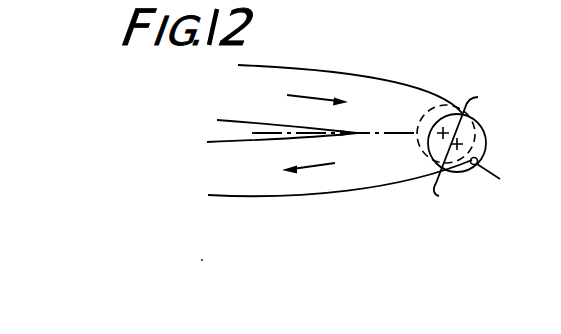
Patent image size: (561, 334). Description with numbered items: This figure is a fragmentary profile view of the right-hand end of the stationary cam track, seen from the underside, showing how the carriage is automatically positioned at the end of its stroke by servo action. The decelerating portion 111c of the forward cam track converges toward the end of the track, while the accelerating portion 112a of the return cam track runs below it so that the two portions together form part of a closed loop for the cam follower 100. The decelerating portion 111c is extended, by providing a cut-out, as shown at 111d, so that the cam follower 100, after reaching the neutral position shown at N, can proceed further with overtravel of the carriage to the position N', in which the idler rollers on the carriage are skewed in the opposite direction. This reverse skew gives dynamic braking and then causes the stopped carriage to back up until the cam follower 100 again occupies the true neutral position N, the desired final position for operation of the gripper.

The decelerating portion 111c is at (436, 66).
The accelerating portion 112a is at (410, 240).
The cam follower 100 is at (480, 146).
The extension of the decelerating portion 111d is at (541, 193).
The neutral position N is at (471, 116).
The overtravel position N' is at (447, 178).